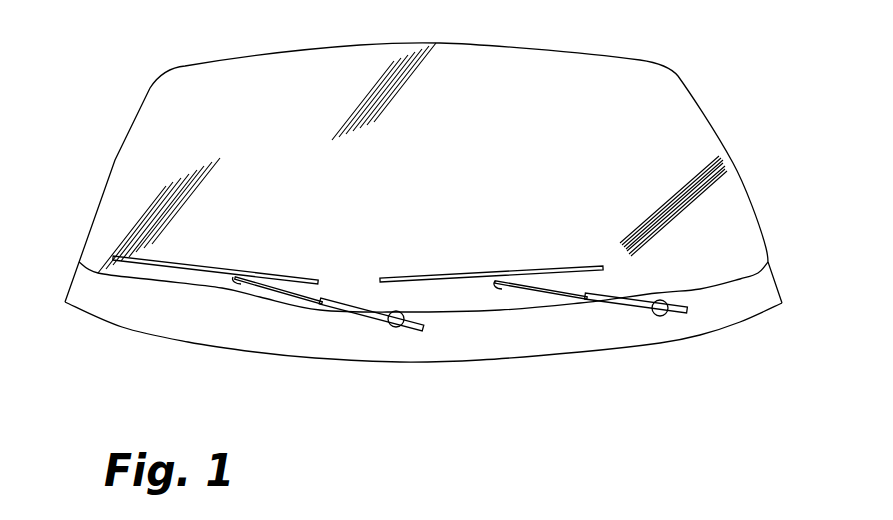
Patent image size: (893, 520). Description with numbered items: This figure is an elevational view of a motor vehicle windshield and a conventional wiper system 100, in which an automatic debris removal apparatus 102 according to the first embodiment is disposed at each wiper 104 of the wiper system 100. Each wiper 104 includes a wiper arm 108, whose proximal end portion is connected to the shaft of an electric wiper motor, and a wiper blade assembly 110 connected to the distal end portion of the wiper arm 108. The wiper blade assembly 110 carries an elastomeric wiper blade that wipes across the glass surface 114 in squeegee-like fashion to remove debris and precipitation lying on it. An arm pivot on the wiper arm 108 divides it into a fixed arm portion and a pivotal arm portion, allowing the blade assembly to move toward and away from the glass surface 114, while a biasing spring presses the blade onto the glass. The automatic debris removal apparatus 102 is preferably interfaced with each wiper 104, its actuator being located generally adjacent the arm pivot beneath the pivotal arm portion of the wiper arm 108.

The wiper system 100 is at (569, 347).
The automatic debris removal apparatus 102 is at (662, 294).
The wiper 104 is at (628, 283).
The wiper arm 108 is at (583, 306).
The wiper blade assembly 110 is at (227, 270).
The glass surface 114 is at (465, 165).